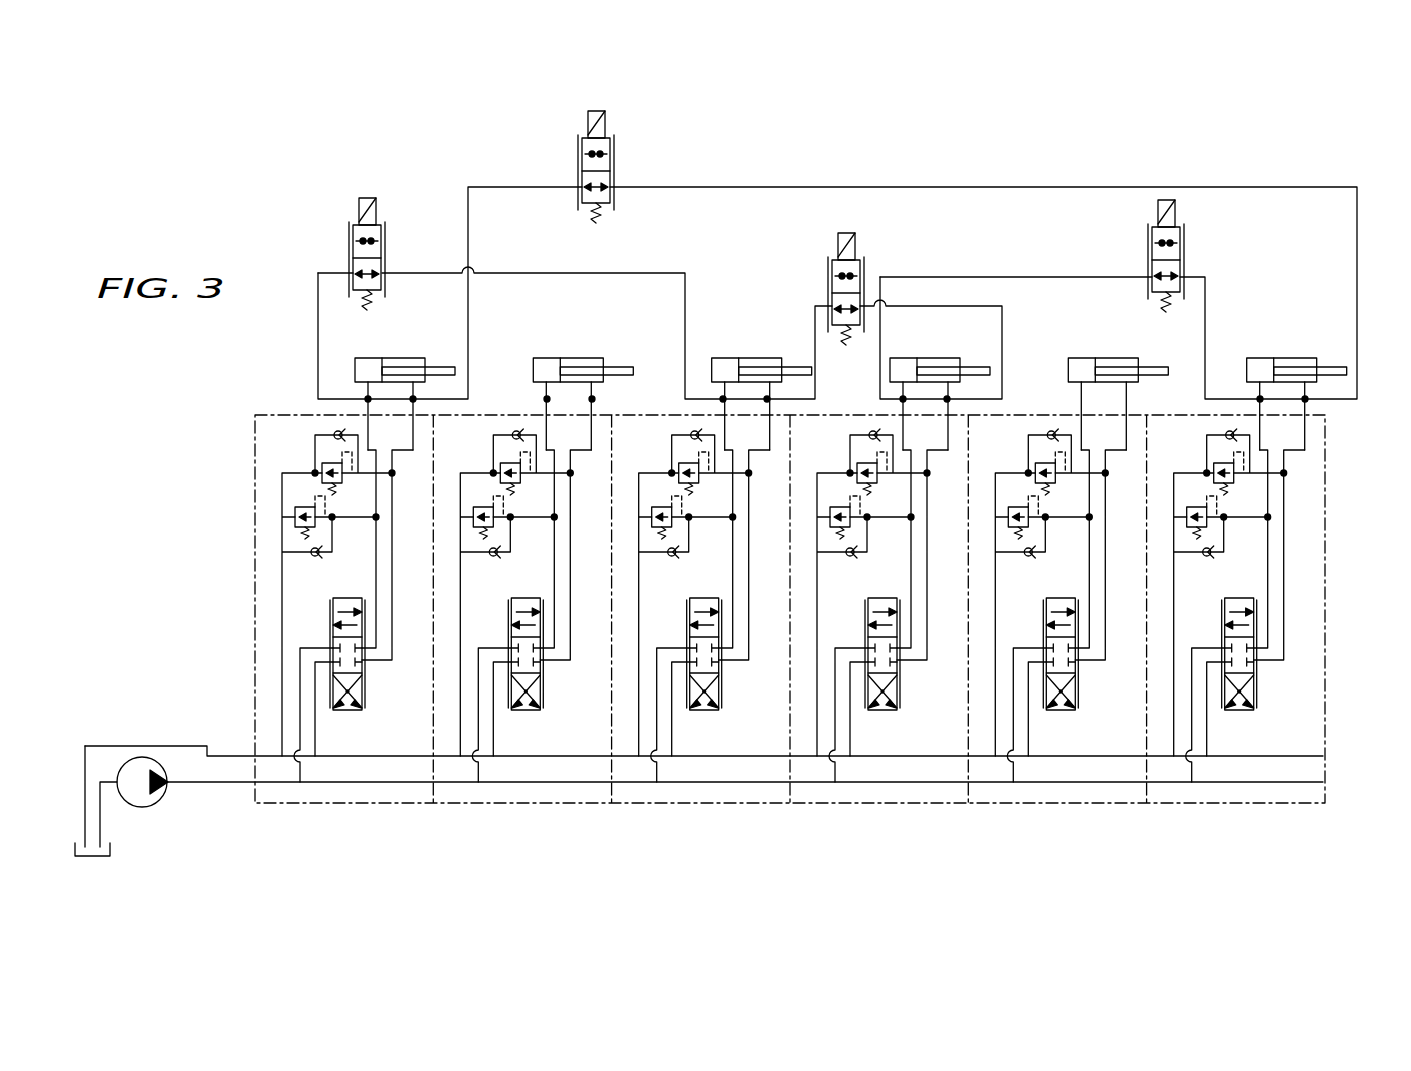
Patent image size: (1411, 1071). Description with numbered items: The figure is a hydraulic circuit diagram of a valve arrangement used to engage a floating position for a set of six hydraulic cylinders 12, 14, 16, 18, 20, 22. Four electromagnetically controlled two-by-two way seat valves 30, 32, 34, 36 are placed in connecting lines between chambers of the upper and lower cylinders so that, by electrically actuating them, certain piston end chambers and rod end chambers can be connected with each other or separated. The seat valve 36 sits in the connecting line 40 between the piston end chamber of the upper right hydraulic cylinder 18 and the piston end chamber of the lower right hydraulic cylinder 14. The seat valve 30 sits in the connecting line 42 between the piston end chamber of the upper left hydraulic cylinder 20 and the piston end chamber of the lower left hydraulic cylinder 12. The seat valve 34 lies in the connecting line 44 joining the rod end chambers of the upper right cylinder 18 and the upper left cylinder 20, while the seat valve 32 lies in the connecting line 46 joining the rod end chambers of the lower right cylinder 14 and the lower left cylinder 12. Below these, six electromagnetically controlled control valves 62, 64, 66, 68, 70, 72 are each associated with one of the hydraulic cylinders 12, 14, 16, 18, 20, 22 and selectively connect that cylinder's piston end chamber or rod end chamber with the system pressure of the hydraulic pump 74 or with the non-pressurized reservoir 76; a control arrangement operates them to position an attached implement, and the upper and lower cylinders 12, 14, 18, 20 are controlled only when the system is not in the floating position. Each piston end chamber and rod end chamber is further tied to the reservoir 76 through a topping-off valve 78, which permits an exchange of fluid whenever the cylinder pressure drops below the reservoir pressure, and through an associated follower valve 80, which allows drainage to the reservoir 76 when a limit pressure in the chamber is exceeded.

The lower left hydraulic cylinder 12 is at (395, 358).
The lower right hydraulic cylinder 14 is at (1283, 358).
The hydraulic cylinder 16 is at (1100, 358).
The upper right hydraulic cylinder 18 is at (905, 357).
The upper left hydraulic cylinder 20 is at (740, 357).
The hydraulic cylinder 22 is at (565, 357).
The seat valve 30 is at (350, 240).
The seat valve 32 is at (578, 152).
The seat valve 34 is at (828, 283).
The seat valve 36 is at (1185, 243).
The connecting line 40 is at (1012, 277).
The connecting line 42 is at (648, 273).
The connecting line 44 is at (1002, 350).
The connecting line 46 is at (1233, 187).
The control valve 62 is at (367, 703).
The control valve 64 is at (1255, 732).
The control valve 66 is at (1074, 730).
The control valve 68 is at (897, 732).
The control valve 70 is at (719, 727).
The control valve 72 is at (541, 730).
The hydraulic pump 74 is at (142, 807).
The reservoir 76 is at (85, 858).
The topping-off valve 78 is at (1210, 558).
The follower valve 80 is at (1205, 525).